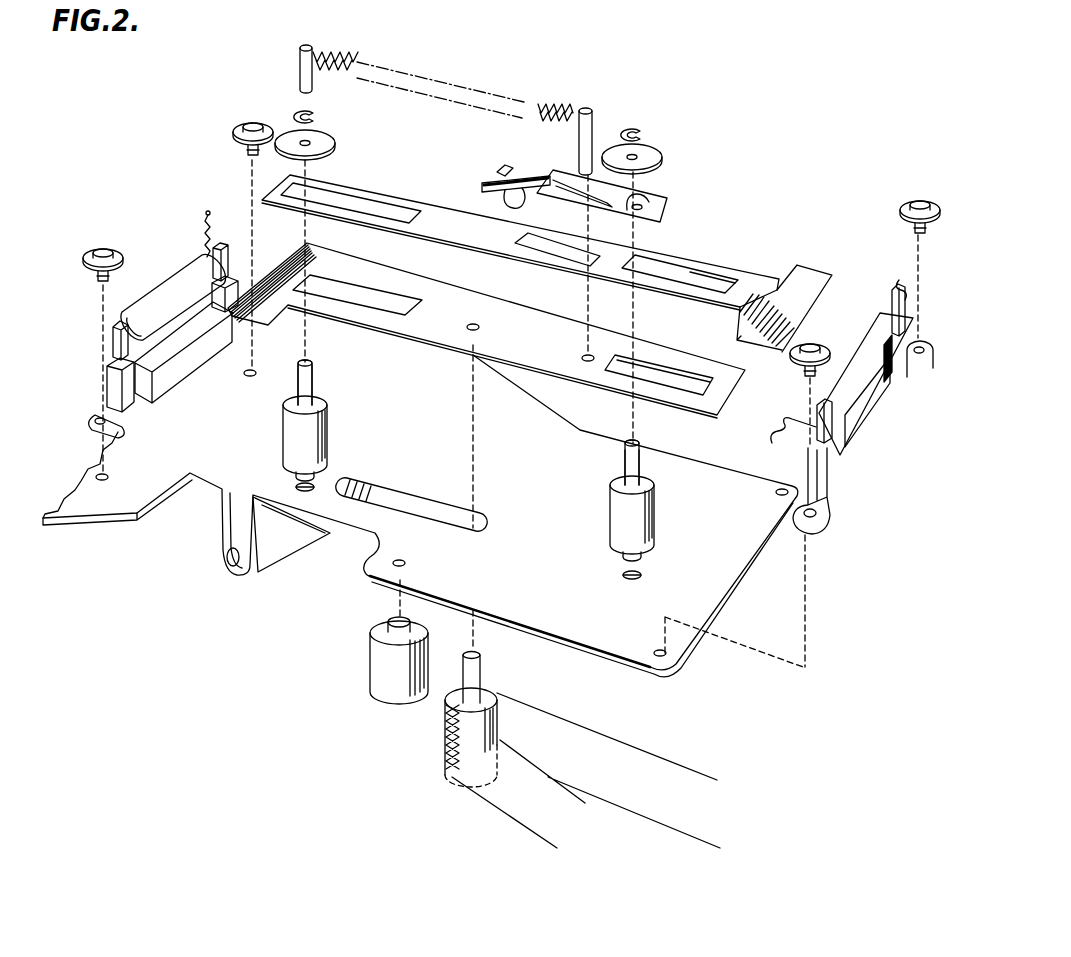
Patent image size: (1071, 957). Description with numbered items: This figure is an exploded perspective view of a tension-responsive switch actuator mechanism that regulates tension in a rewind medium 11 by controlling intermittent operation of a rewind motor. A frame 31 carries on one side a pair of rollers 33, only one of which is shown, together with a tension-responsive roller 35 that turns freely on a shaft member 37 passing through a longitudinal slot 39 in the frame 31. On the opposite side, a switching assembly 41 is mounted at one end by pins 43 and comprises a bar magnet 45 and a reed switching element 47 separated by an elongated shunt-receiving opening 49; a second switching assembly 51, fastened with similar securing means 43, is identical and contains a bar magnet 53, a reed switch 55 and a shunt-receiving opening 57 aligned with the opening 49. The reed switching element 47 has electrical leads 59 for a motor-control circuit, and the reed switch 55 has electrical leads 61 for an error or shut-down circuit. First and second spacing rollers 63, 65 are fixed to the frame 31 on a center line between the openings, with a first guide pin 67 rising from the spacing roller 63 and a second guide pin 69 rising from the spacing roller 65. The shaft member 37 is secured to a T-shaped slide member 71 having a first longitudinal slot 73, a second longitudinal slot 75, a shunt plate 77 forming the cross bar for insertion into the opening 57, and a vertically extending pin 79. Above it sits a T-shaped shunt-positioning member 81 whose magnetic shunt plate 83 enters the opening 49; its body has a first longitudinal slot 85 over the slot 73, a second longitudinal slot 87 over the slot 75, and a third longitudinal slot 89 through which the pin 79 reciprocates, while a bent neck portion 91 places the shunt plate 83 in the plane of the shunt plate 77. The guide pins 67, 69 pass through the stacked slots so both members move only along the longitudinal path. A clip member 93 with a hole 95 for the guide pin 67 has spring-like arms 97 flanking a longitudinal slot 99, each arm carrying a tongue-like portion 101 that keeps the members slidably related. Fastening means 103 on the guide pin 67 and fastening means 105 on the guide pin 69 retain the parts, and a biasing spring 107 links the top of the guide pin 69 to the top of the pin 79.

The rewind medium 11 is at (576, 768).
The frame 31 is at (550, 573).
The rollers 33 is at (370, 657).
The tension-responsive roller 35 is at (448, 703).
The shaft member 37 is at (482, 660).
The longitudinal slot 39 is at (418, 500).
The switching assembly 41 is at (822, 475).
The pins 43 is at (245, 121).
The bar magnet 45 is at (875, 433).
The reed switching element 47 is at (892, 315).
The shunt-receiving opening 49 is at (873, 385).
The second switching assembly 51 is at (108, 394).
The bar magnet 53 is at (168, 386).
The reed switch 55 is at (171, 278).
The shunt-receiving opening 57 is at (182, 324).
The electrical leads 59 is at (904, 300).
The electrical leads 61 is at (208, 213).
The first spacing roller 63 is at (612, 498).
The second spacing roller 65 is at (284, 441).
The first guide pin 67 is at (626, 463).
The second guide pin 69 is at (307, 45).
The slide member 71 is at (512, 310).
The first longitudinal slot 73 is at (622, 374).
The second longitudinal slot 75 is at (394, 298).
The shunt plate 77 is at (329, 259).
The vertically extending pin 79 is at (601, 80).
The shunt-positioning member 81 is at (704, 240).
The magnetic shunt plate 83 is at (809, 274).
The first longitudinal slot 85 is at (662, 280).
The second longitudinal slot 87 is at (373, 196).
The third longitudinal slot 89 is at (528, 258).
The neck portion 91 is at (774, 292).
The clip member 93 is at (674, 217).
The hole 95 is at (645, 199).
The spring-like arms 97 is at (501, 170).
The longitudinal slot 99 is at (522, 180).
The tongue-like portion 101 is at (524, 168).
The fastening means 103 is at (656, 152).
The fastening means 105 is at (331, 141).
The biasing spring 107 is at (346, 53).